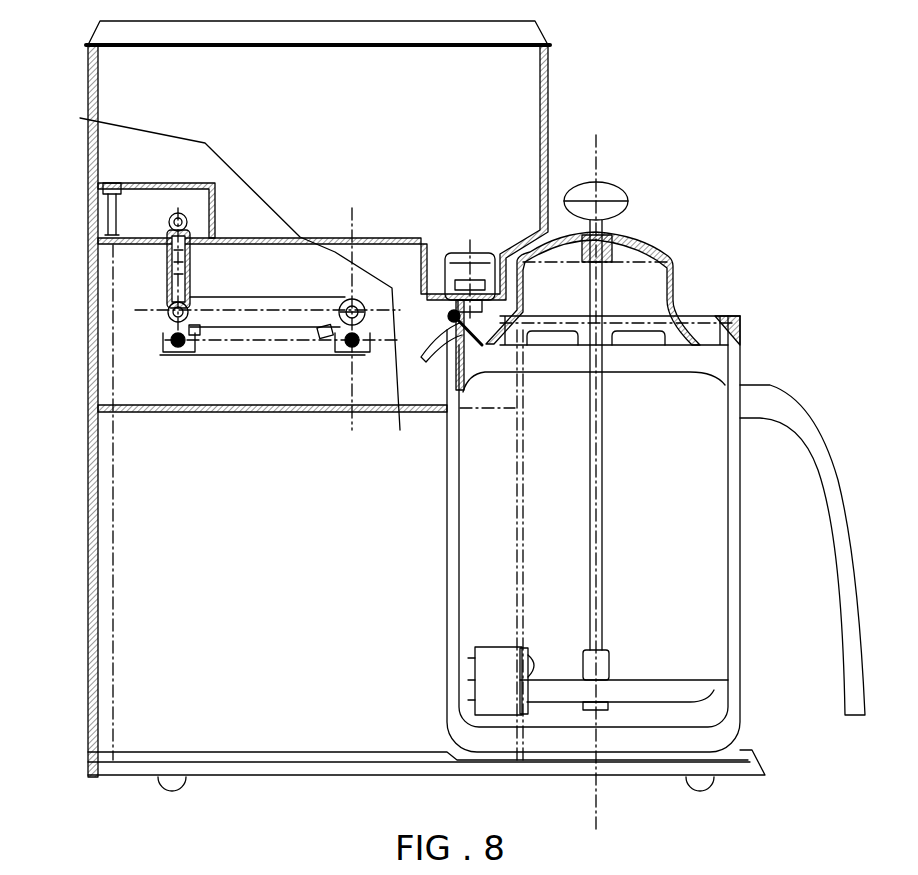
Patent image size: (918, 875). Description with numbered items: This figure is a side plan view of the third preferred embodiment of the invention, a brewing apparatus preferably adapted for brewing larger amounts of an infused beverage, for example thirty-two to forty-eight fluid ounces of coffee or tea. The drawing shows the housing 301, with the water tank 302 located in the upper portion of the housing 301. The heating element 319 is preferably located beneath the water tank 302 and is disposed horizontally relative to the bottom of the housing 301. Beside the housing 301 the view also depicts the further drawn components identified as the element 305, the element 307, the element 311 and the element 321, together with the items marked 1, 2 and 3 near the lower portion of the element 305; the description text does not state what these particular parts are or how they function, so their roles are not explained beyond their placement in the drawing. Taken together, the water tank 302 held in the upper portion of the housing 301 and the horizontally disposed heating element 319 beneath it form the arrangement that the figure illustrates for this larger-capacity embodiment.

The housing 301 is at (82, 562).
The water tank 302 is at (130, 88).
The carafe 305 is at (690, 420).
The sensor 307 is at (470, 650).
The dispensing nozzle 311 is at (452, 255).
The heating element 319 is at (200, 333).
The lid 321 is at (657, 243).
The sensor terminal 1 is at (470, 700).
The sensor terminal 2 is at (470, 680).
The sensor terminal 3 is at (470, 658).